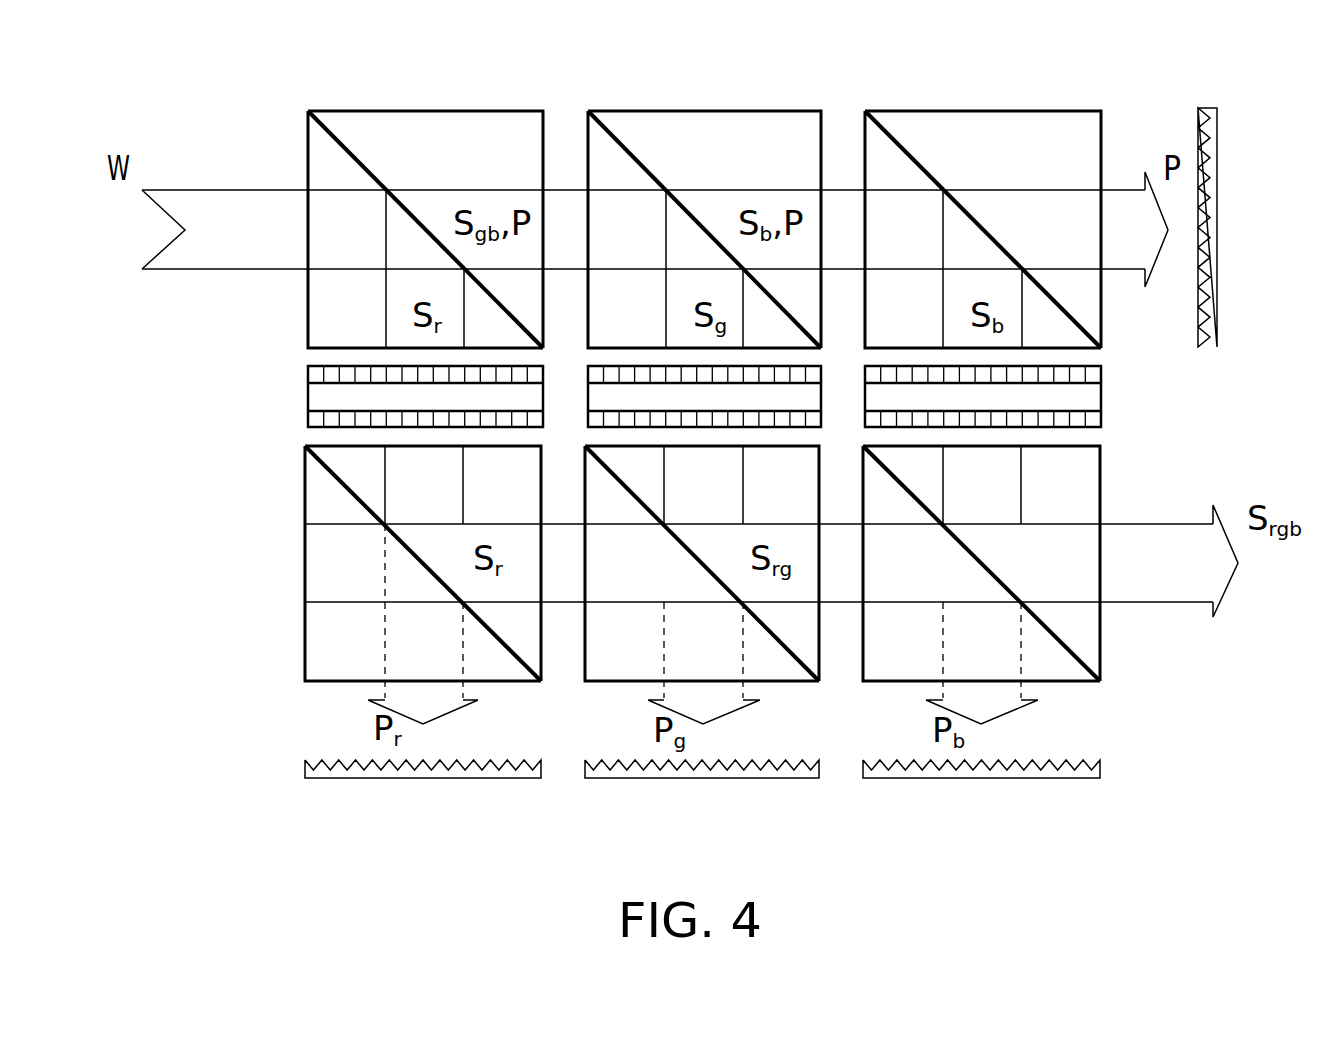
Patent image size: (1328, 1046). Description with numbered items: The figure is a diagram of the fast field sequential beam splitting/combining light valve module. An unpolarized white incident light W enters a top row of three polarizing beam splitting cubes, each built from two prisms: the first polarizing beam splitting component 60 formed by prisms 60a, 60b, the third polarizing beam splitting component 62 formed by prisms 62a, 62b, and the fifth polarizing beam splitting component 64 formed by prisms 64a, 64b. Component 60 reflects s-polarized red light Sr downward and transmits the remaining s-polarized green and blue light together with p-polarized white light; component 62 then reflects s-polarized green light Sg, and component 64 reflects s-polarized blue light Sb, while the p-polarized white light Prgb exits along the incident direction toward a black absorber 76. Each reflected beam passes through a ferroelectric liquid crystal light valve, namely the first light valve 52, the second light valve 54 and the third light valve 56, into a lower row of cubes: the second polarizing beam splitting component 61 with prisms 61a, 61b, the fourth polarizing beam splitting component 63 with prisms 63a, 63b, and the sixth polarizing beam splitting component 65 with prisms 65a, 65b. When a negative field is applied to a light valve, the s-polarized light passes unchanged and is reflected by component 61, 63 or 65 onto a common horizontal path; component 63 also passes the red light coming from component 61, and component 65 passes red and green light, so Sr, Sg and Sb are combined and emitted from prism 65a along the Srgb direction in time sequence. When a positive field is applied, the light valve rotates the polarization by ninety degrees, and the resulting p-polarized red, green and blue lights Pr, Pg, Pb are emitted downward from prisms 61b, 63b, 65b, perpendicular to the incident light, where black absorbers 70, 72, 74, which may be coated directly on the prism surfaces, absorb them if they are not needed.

The first light valve 52 is at (307, 398).
The second light valve 54 is at (588, 398).
The third light valve 56 is at (865, 398).
The first polarizing beam splitting component 60 is at (345, 142).
The prism of the first polarizing beam splitting component 60a is at (325, 158).
The prism of the first polarizing beam splitting component 60b is at (455, 128).
The third polarizing beam splitting component 62 is at (623, 138).
The prism of the third polarizing beam splitting component 62a is at (598, 142).
The prism of the third polarizing beam splitting component 62b is at (733, 128).
The fifth polarizing beam splitting component 64 is at (902, 138).
The prism of the fifth polarizing beam splitting component 64a is at (875, 142).
The prism of the fifth polarizing beam splitting component 64b is at (1013, 128).
The second polarizing beam splitting component 61 is at (513, 652).
The prism of the second polarizing beam splitting component 61a is at (535, 654).
The prism of the second polarizing beam splitting component 61b is at (319, 643).
The fourth polarizing beam splitting component 63 is at (793, 655).
The prism of the fourth polarizing beam splitting component 63a is at (812, 653).
The prism of the fourth polarizing beam splitting component 63b is at (629, 674).
The sixth polarizing beam splitting component 65 is at (1073, 655).
The prism of the sixth polarizing beam splitting component 65a is at (1090, 647).
The prism of the sixth polarizing beam splitting component 65b is at (908, 673).
The black absorber 70 is at (337, 780).
The black absorber 72 is at (617, 780).
The black absorber 74 is at (897, 780).
The black absorber 76 is at (1217, 145).